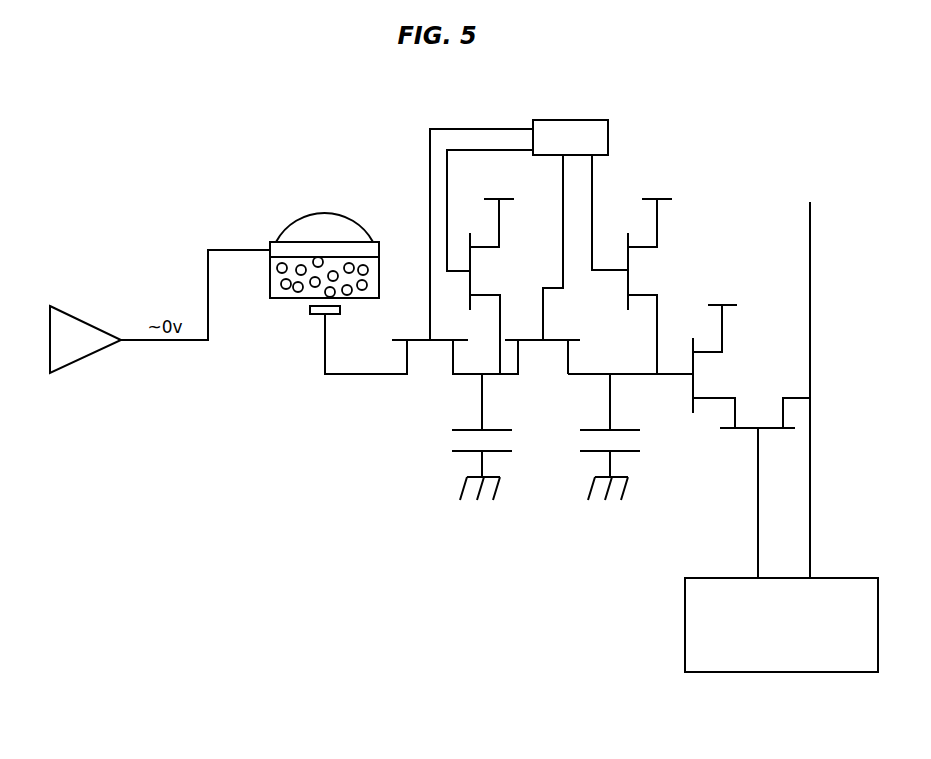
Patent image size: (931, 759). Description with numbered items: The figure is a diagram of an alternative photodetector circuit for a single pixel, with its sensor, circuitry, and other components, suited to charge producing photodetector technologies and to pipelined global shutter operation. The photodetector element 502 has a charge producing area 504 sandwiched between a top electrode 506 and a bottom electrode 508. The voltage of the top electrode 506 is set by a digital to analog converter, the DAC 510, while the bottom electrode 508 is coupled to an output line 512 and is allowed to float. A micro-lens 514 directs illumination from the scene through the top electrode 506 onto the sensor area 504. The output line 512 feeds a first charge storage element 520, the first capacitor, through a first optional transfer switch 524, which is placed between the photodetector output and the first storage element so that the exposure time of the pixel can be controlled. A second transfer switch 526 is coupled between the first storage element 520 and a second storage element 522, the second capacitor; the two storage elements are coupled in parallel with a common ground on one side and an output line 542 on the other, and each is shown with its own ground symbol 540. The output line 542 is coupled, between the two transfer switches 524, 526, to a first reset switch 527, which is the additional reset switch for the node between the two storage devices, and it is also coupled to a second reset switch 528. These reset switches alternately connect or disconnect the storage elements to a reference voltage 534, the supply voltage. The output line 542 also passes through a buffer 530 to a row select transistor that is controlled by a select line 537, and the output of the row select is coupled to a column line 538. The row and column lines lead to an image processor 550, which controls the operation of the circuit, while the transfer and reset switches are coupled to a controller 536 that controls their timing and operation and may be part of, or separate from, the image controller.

The photodetector element 502 is at (348, 178).
The charge producing area 504 is at (380, 265).
The top electrode 506 is at (270, 244).
The bottom electrode 508 is at (312, 316).
The DAC 510 is at (108, 312).
The output line 512 is at (322, 364).
The micro-lens 514 is at (315, 213).
The first charge storage element 520 is at (460, 453).
The second storage element 522 is at (592, 454).
The first transfer switch 524 is at (407, 338).
The second transfer switch 526 is at (572, 348).
The first reset switch 527 is at (497, 247).
The second reset switch 528 is at (628, 262).
The buffer 530 is at (698, 366).
The reference voltage 534 is at (661, 200).
The controller 536 is at (580, 120).
The select line 537 is at (757, 544).
The column line 538 is at (810, 287).
The ground 540 is at (622, 498).
The output line 542 is at (648, 377).
The image processor 550 is at (781, 625).